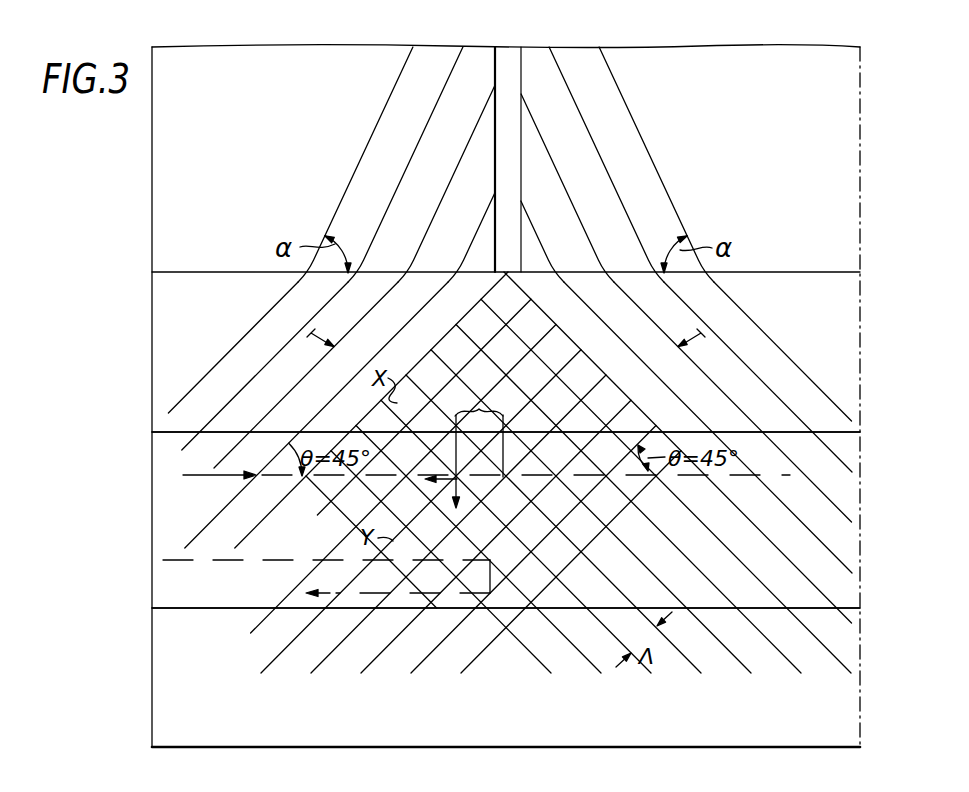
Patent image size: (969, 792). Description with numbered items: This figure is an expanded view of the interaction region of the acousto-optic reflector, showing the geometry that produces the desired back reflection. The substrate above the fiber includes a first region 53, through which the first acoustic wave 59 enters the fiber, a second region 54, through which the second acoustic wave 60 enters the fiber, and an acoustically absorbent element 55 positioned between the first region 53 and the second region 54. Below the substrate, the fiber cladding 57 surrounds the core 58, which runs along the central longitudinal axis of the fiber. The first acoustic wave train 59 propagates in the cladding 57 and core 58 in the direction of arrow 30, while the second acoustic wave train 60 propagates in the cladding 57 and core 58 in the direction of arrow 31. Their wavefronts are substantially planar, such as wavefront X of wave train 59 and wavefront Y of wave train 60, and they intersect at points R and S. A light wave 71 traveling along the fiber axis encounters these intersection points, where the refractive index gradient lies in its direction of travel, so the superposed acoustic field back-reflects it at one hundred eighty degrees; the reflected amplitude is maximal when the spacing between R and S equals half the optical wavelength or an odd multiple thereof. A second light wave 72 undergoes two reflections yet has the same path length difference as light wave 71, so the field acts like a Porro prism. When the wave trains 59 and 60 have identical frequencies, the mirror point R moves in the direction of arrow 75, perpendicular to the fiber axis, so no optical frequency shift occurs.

The arrow 30 is at (701, 346).
The arrow 31 is at (311, 348).
The first region 53 is at (637, 157).
The second region 54 is at (446, 179).
The acoustically absorbent element 55 is at (510, 143).
The cladding 57 is at (833, 323).
The core 58 is at (833, 530).
The first acoustic wave 59 is at (827, 397).
The second acoustic wave 60 is at (257, 323).
The light wave 71 is at (210, 476).
The light wave 72 is at (291, 560).
The arrow 75 is at (503, 477).